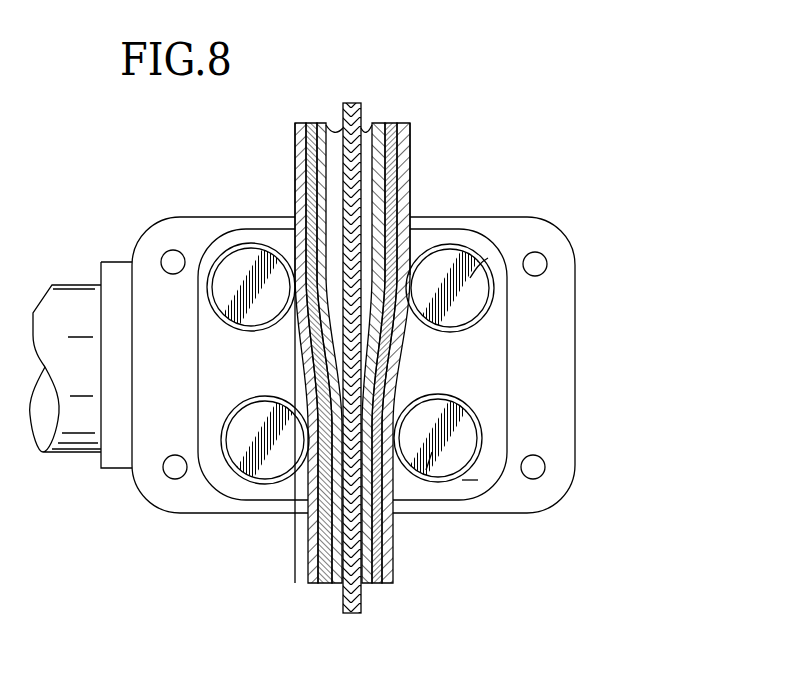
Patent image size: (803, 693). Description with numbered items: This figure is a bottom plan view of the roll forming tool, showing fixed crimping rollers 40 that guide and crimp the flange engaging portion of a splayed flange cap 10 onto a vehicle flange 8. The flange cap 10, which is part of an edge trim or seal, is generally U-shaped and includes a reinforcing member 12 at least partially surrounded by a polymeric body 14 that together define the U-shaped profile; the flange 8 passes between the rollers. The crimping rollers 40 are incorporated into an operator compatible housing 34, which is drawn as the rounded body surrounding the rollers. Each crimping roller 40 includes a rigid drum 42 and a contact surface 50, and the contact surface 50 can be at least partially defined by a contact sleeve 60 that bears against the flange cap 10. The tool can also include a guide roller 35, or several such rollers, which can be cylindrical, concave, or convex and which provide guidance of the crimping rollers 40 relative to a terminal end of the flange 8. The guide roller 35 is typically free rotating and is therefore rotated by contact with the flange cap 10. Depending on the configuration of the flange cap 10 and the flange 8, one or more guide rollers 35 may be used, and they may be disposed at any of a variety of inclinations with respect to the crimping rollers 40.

The vehicle flange 8 is at (356, 112).
The flange cap 10 is at (410, 168).
The reinforcing member 12 is at (316, 128).
The polymeric body 14 is at (295, 157).
The housing 34 is at (560, 328).
The guide roller 35 is at (470, 278).
The crimping roller 40 is at (487, 425).
The rigid drum 42 is at (428, 470).
The contact surface 50 is at (225, 470).
The contact sleeve 60 is at (470, 478).